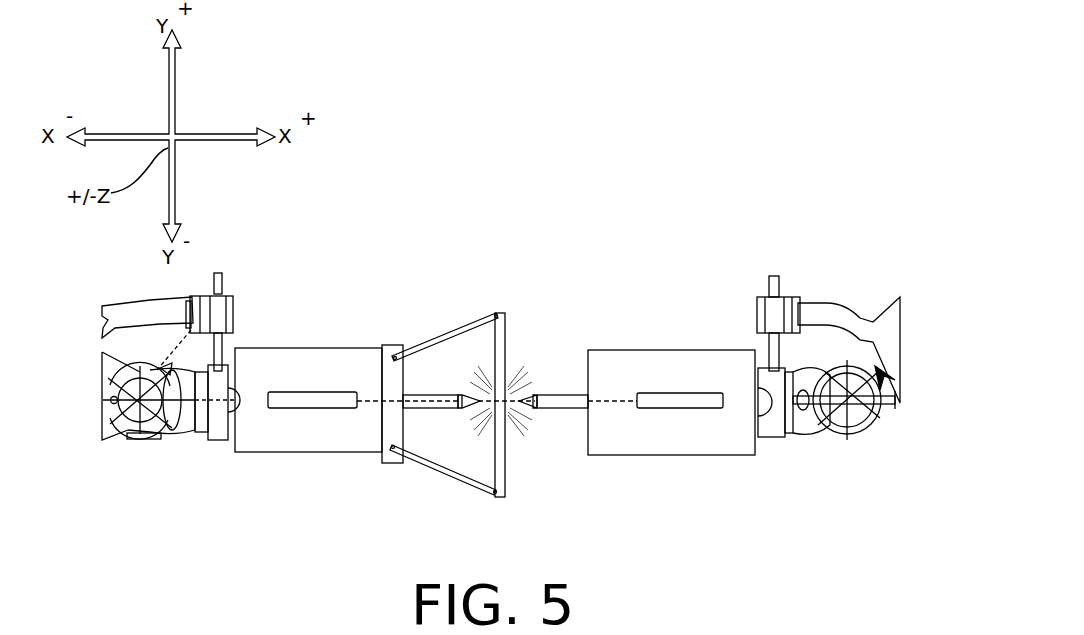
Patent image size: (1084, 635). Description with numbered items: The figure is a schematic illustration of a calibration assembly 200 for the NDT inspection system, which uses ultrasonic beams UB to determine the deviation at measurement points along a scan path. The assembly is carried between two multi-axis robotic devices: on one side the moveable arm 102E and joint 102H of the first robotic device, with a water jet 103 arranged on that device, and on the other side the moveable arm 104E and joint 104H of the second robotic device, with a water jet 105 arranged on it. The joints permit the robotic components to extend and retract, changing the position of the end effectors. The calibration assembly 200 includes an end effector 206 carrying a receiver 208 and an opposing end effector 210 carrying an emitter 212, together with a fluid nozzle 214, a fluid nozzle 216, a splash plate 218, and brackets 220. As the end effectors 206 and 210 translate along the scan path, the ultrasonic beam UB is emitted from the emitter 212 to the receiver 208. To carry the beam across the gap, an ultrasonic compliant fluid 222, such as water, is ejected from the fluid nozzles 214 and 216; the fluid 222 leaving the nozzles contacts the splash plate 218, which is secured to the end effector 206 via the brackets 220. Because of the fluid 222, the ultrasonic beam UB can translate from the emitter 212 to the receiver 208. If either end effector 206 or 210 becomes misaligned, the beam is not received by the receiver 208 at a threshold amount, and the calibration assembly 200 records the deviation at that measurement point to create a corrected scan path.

The moveable arm 102E is at (103, 405).
The joint 102H is at (128, 412).
The water jet 103 is at (202, 271).
The moveable arm 104E is at (828, 372).
The joint 104H is at (880, 424).
The water jet 105 is at (788, 306).
The calibration assembly 200 is at (544, 186).
The end effector 206 is at (343, 348).
The receiver 208 is at (317, 409).
The end effector 210 is at (655, 350).
The emitter 212 is at (648, 410).
The fluid nozzle 214 is at (425, 395).
The fluid nozzle 216 is at (558, 411).
The splash plate 218 is at (510, 318).
The brackets 220 is at (463, 318).
The ultrasonic compliant fluid 222 is at (509, 410).
The ultrasonic beam UB is at (518, 400).